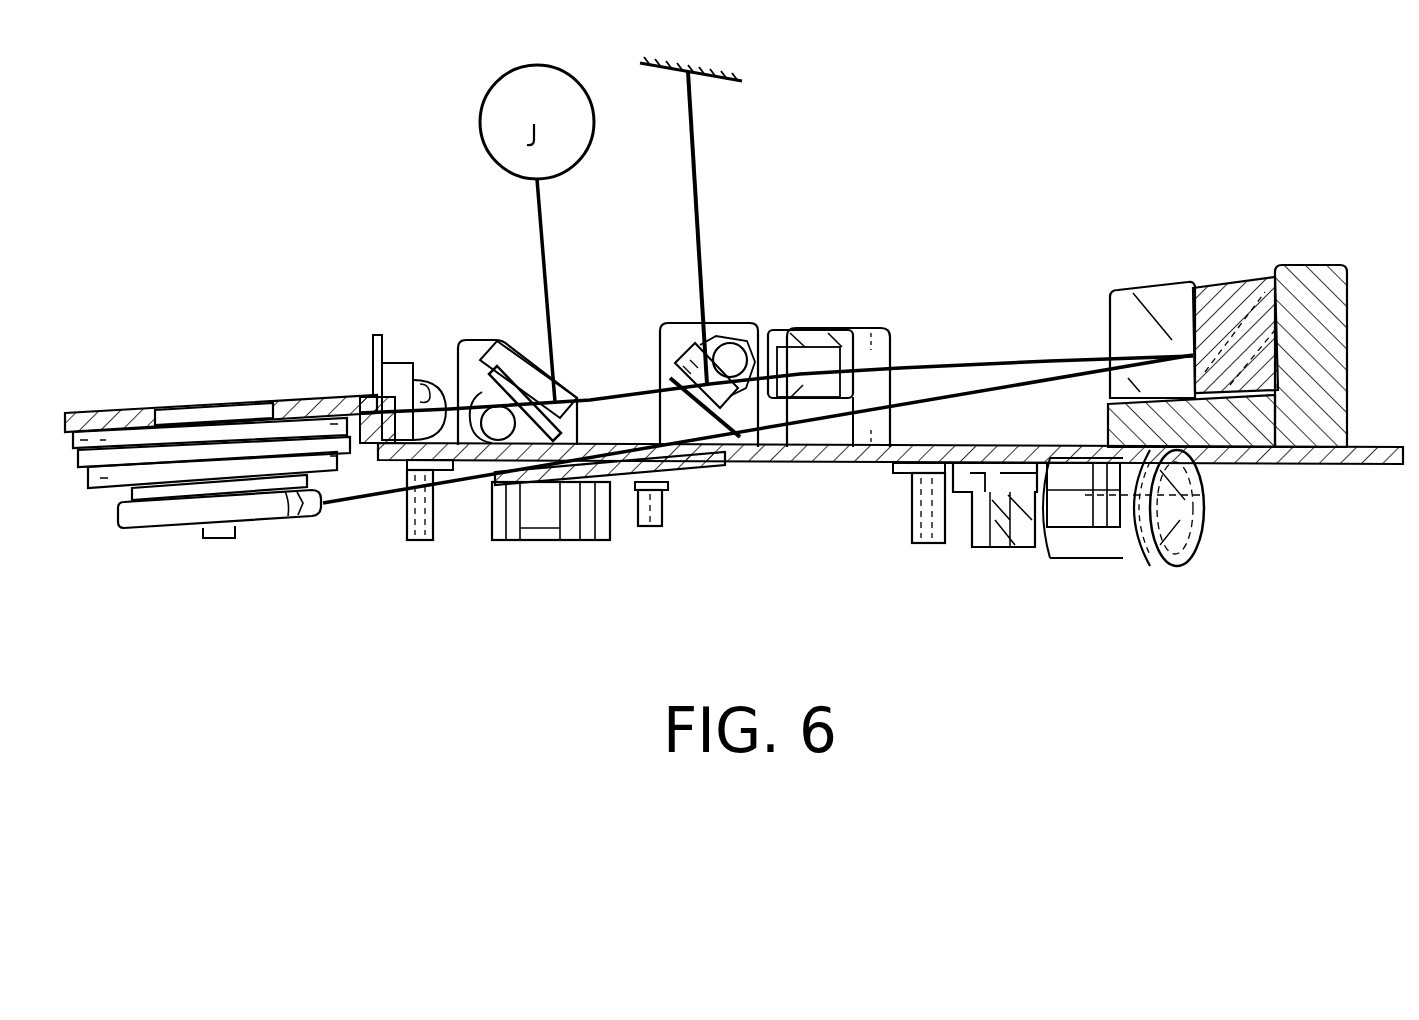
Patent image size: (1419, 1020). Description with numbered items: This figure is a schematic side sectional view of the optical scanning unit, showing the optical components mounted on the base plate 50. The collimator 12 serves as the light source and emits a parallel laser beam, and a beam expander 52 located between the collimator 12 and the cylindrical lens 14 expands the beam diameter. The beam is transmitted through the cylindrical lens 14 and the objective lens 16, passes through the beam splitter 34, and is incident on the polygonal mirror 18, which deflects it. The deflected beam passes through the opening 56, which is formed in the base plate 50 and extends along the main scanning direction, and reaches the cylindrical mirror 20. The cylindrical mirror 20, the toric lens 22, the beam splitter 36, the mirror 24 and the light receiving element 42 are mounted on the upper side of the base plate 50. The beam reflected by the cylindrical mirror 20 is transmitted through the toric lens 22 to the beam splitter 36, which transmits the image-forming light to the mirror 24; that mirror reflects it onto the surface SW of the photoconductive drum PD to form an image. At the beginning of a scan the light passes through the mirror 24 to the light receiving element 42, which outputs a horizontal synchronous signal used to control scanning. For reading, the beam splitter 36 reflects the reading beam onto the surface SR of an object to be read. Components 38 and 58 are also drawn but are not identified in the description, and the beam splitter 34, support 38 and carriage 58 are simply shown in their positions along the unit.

The collimator 12 is at (1141, 568).
The cylindrical lens 14 is at (940, 546).
The objective lens 16 is at (650, 528).
The polygonal mirror 18 is at (290, 520).
The cylindrical mirror 20 is at (1185, 305).
The toric lens 22 is at (805, 331).
The mirror 24 is at (530, 386).
The beam splitter 34 is at (556, 542).
The beam splitter 36 is at (668, 370).
The bracket 38 is at (410, 526).
The light receiving element 42 is at (393, 420).
The base plate 50 is at (1378, 446).
The beam expander 52 is at (1013, 550).
The opening 56 is at (735, 464).
The stacked carriage 58 is at (252, 402).
The photoconductive drum PD is at (583, 78).
The surface of the photoconductive drum SW is at (566, 168).
The surface of an object to be read SR is at (735, 80).